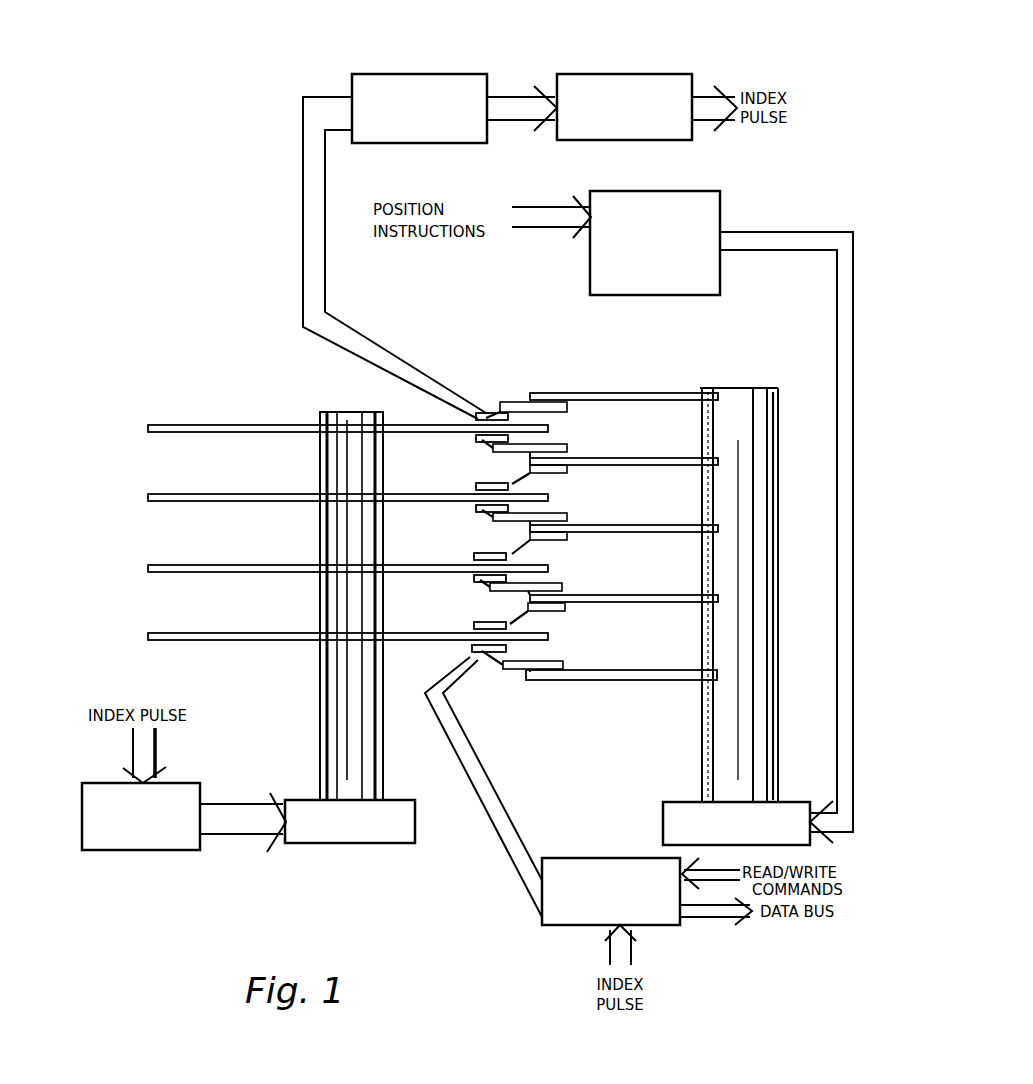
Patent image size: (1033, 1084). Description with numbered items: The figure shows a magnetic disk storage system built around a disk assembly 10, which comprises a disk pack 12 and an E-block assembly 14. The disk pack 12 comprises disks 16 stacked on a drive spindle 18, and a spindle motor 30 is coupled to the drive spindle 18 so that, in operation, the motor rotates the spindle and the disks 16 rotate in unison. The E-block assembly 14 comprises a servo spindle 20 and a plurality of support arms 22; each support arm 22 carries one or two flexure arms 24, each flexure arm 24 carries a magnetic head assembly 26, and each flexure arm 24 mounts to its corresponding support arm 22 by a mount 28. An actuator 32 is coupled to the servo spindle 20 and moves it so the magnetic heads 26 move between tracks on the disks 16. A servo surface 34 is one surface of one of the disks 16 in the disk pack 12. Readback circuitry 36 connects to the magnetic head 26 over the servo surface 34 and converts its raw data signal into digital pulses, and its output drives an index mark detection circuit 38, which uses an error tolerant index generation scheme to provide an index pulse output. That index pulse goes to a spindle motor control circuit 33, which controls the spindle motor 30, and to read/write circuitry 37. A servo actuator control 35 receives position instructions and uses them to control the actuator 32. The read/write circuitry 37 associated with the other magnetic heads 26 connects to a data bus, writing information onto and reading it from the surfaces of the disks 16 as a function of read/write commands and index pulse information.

The disk assembly 10 is at (186, 864).
The disk pack 12 is at (175, 396).
The E-block assembly 14 is at (748, 382).
The disks 16 is at (152, 435).
The drive spindle 18 is at (336, 412).
The servo spindle 20 is at (712, 690).
The support arms 22 is at (624, 400).
The flexure arms 24 is at (498, 447).
The magnetic head assembly 26 is at (474, 416).
The mount 28 is at (540, 408).
The spindle motor 30 is at (302, 800).
The actuator 32 is at (660, 817).
The spindle motor control circuit 33 is at (95, 850).
The servo surface 34 is at (231, 425).
The servo actuator control 35 is at (623, 295).
The readback circuitry 36 is at (404, 74).
The read/write circuitry 37 is at (598, 858).
The index mark detection circuit 38 is at (635, 74).